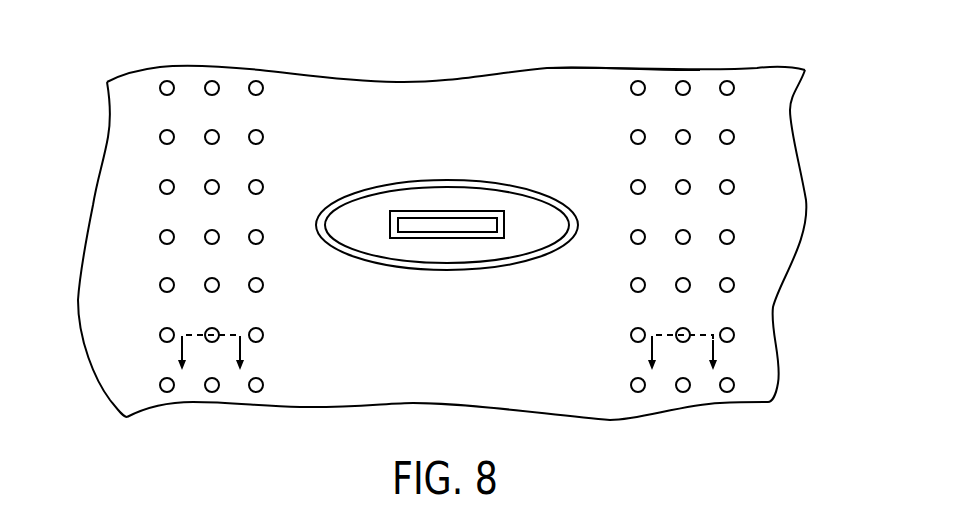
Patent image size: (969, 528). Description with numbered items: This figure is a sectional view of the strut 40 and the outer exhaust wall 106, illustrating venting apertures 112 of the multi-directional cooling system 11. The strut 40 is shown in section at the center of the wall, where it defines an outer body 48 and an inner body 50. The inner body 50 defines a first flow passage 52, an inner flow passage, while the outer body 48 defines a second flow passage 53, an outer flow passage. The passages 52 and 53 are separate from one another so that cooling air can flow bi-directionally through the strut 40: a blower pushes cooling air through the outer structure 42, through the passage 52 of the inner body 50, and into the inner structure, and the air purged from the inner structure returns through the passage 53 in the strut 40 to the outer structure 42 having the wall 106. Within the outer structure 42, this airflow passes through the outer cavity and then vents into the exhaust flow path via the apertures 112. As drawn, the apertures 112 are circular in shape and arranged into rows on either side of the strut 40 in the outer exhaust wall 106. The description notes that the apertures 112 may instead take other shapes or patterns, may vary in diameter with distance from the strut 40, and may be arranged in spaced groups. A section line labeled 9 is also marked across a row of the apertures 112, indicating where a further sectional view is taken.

The multi-directional cooling system 11 is at (603, 107).
The outer structure 42 is at (417, 80).
The outer exhaust wall 106 is at (563, 88).
The strut 40 is at (386, 350).
The outer body 48 is at (365, 190).
The second flow passage 53 is at (353, 232).
The inner body 50 is at (422, 238).
The first flow passage 52 is at (475, 226).
The apertures 112 is at (250, 183).
The section line 9- 9 is at (448, 355).